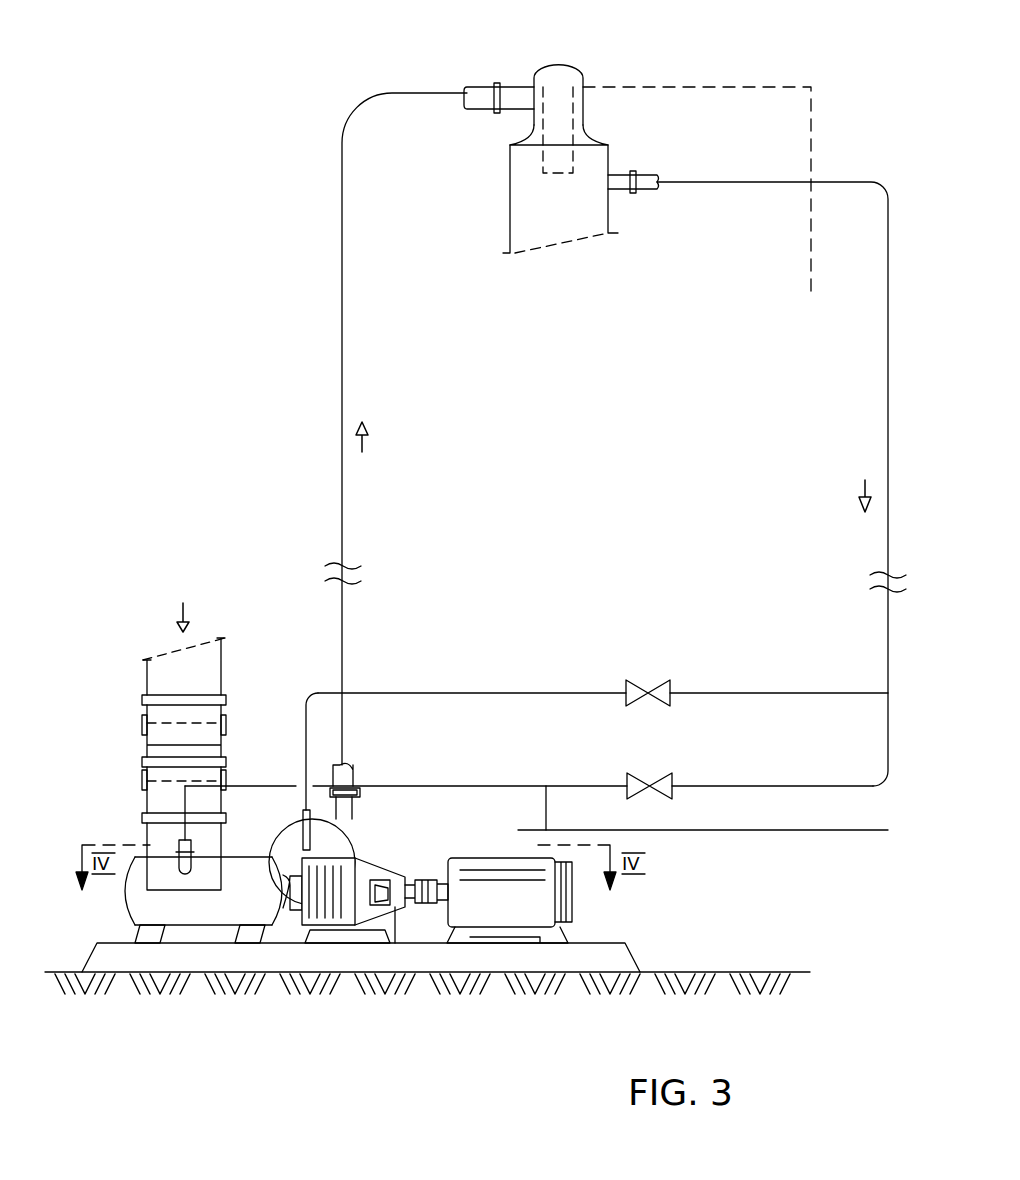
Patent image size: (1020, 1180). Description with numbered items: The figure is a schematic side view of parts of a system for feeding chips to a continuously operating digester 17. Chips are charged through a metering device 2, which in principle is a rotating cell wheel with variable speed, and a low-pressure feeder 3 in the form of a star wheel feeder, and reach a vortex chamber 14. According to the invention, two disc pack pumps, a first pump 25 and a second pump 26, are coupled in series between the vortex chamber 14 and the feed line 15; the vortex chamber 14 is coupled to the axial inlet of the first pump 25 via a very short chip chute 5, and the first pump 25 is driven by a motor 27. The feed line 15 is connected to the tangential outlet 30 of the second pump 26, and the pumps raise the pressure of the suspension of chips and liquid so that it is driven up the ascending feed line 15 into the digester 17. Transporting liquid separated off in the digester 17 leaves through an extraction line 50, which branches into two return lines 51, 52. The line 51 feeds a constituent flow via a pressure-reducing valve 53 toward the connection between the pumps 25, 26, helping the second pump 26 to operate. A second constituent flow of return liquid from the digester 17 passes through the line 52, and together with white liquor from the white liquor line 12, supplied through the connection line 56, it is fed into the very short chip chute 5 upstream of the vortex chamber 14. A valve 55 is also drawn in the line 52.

The metering device 2 is at (142, 711).
The low-pressure feeder 3 is at (145, 776).
The chip chute 5 is at (150, 833).
The white liquor line 12 is at (763, 832).
The vortex chamber 14 is at (118, 905).
The feed line 15 is at (343, 522).
The digester 17 is at (510, 205).
The first pump 25 is at (395, 870).
The second pump 26 is at (284, 838).
The motor 27 is at (572, 903).
The tangential outlet 30 is at (355, 820).
The extraction line 50 is at (888, 360).
The return line 51 is at (745, 693).
The return line 52 is at (735, 786).
The pressure-reducing valve 53 is at (670, 680).
The second valve 55 is at (673, 774).
The connection line 56 is at (545, 800).